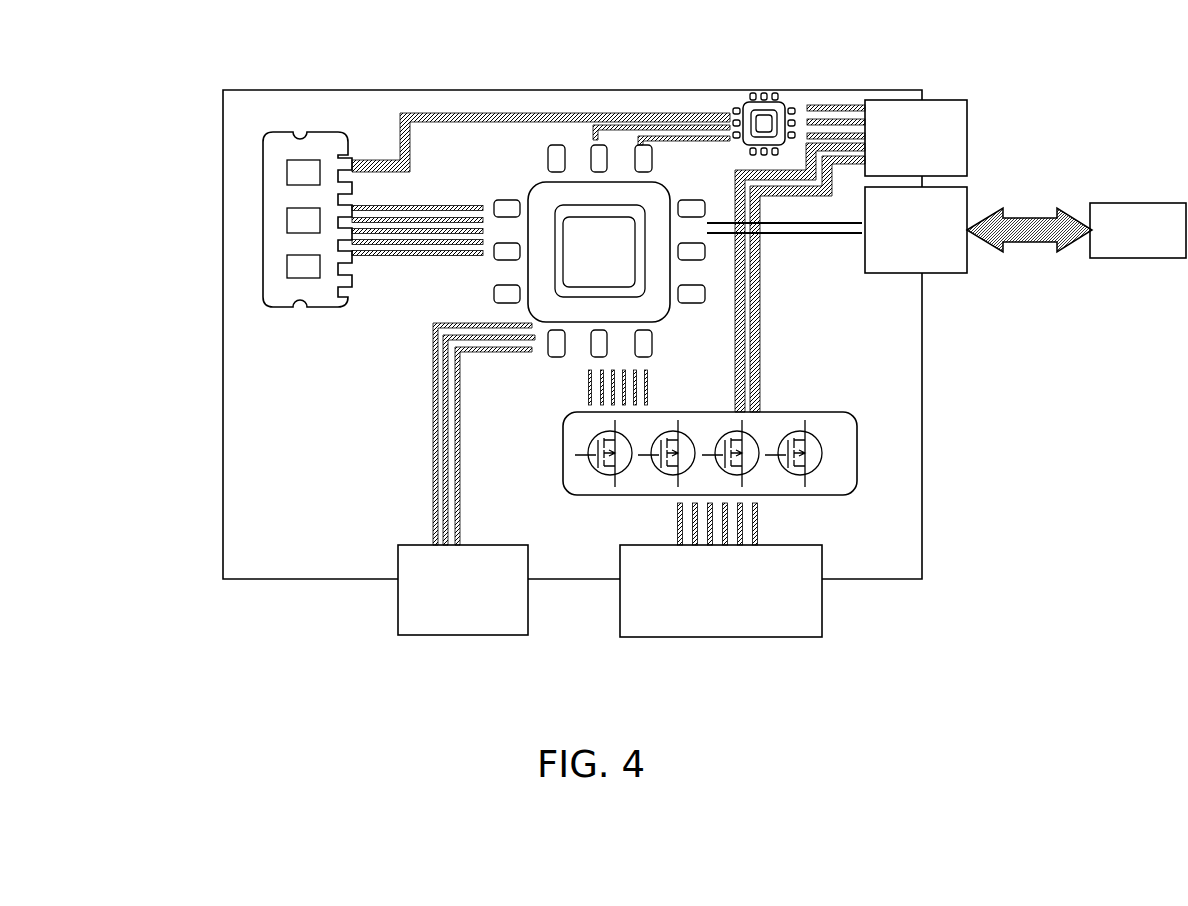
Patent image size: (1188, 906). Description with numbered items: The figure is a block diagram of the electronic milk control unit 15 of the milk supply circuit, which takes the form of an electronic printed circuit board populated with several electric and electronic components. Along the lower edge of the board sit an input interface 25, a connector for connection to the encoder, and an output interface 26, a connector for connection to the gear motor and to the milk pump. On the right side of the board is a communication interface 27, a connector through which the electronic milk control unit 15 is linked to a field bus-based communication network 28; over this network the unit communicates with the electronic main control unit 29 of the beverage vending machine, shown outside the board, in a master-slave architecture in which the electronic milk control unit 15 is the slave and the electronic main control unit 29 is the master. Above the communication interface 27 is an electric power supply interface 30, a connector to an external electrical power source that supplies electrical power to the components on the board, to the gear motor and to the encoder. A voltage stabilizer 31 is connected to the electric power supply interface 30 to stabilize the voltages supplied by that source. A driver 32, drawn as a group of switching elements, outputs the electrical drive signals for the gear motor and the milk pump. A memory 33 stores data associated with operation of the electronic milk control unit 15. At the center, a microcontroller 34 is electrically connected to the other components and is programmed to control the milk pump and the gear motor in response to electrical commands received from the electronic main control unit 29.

The electronic milk control unit 15 is at (245, 517).
The input interface 25 is at (437, 628).
The output interface 26 is at (755, 622).
The communication interface 27 is at (943, 280).
The field bus-based communication network 28 is at (1031, 243).
The electronic main control unit 29 is at (1152, 260).
The electric power supply interface 30 is at (962, 147).
The voltage stabilizer 31 is at (787, 104).
The driver 32 is at (838, 418).
The memory 33 is at (275, 237).
The microcontroller 34 is at (540, 197).